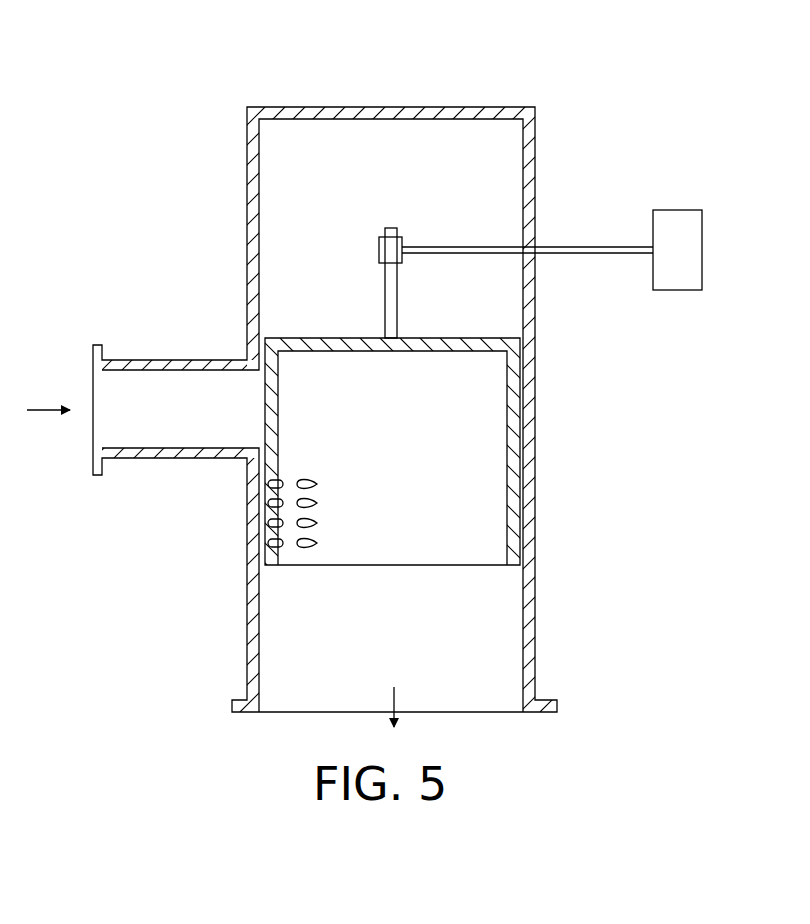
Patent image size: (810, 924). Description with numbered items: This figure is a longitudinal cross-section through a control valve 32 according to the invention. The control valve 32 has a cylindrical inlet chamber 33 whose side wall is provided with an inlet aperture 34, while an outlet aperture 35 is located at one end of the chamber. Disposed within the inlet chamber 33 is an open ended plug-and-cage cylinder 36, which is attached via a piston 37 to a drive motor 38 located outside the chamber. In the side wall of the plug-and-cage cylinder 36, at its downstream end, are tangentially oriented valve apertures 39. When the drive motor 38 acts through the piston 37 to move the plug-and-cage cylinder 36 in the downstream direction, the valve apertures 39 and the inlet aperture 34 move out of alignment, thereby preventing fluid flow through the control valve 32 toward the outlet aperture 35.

The control valve 32 is at (516, 77).
The cylindrical inlet chamber 33 is at (483, 627).
The inlet aperture 34 is at (187, 437).
The outlet aperture 35 is at (481, 712).
The plug-and-cage cylinder 36 is at (512, 415).
The piston 37 is at (397, 283).
The drive motor 38 is at (679, 210).
The valve apertures 39 is at (283, 548).